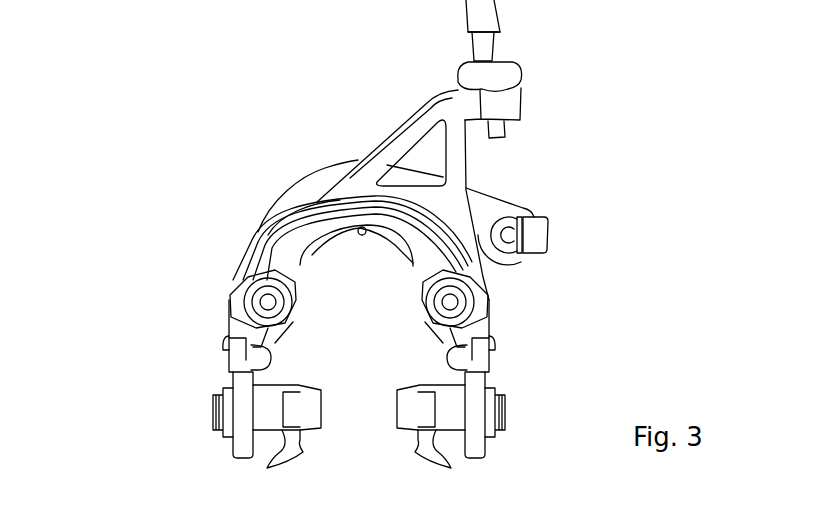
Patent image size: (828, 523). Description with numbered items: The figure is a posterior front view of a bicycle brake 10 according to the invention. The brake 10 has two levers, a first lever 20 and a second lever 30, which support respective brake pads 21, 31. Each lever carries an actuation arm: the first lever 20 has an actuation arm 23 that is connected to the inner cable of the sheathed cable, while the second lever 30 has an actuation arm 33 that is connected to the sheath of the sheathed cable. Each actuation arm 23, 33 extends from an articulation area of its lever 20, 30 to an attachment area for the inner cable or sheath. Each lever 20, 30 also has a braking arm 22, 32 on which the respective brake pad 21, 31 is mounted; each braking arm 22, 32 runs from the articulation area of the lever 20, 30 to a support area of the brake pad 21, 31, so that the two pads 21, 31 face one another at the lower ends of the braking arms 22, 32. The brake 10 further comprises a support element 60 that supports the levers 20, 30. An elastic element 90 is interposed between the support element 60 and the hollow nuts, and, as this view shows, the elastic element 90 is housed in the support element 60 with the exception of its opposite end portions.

The bicycle brake 10 is at (582, 73).
The first lever 20 is at (262, 200).
The brake pad 21 is at (315, 408).
The braking arm 22 is at (233, 368).
The actuation arm 23 is at (510, 202).
The second lever 30 is at (397, 110).
The brake pad 31 is at (405, 413).
The braking arm 32 is at (498, 338).
The actuation arm 33 is at (433, 113).
The support element 60 is at (315, 203).
The elastic element 90 is at (348, 213).